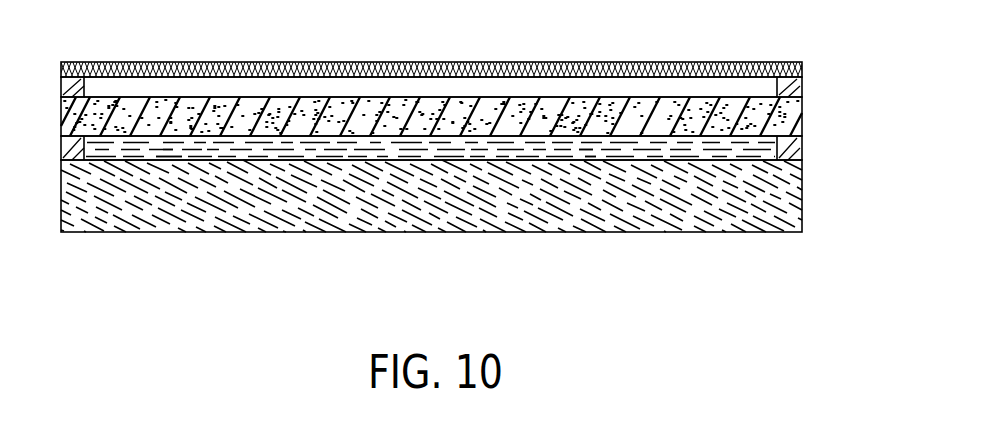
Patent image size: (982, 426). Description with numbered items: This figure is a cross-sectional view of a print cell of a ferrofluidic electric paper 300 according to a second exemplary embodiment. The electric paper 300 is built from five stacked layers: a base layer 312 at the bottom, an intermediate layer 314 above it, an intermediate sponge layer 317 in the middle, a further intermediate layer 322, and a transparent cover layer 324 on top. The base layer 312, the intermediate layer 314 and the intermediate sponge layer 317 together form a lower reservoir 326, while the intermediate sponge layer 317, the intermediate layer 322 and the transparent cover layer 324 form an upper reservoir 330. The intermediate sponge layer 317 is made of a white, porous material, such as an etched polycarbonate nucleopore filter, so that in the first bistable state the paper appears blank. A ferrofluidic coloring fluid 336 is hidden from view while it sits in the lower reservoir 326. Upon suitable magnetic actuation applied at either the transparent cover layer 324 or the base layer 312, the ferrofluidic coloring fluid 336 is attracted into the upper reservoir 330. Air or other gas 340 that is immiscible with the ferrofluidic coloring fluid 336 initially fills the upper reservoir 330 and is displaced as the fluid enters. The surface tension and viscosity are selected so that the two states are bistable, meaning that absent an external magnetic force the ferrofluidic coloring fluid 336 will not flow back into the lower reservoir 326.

The ferrofluidic electric paper 300 is at (510, 43).
The base layer 312 is at (802, 195).
The intermediate layer 314 is at (802, 146).
The intermediate sponge layer 317 is at (802, 118).
The intermediate layer 322 is at (802, 82).
The transparent cover layer 324 is at (692, 62).
The lower reservoir 326 is at (180, 153).
The upper reservoir 330 is at (175, 83).
The ferrofluidic coloring fluid 336 is at (590, 152).
The air or other gas 340 is at (325, 83).